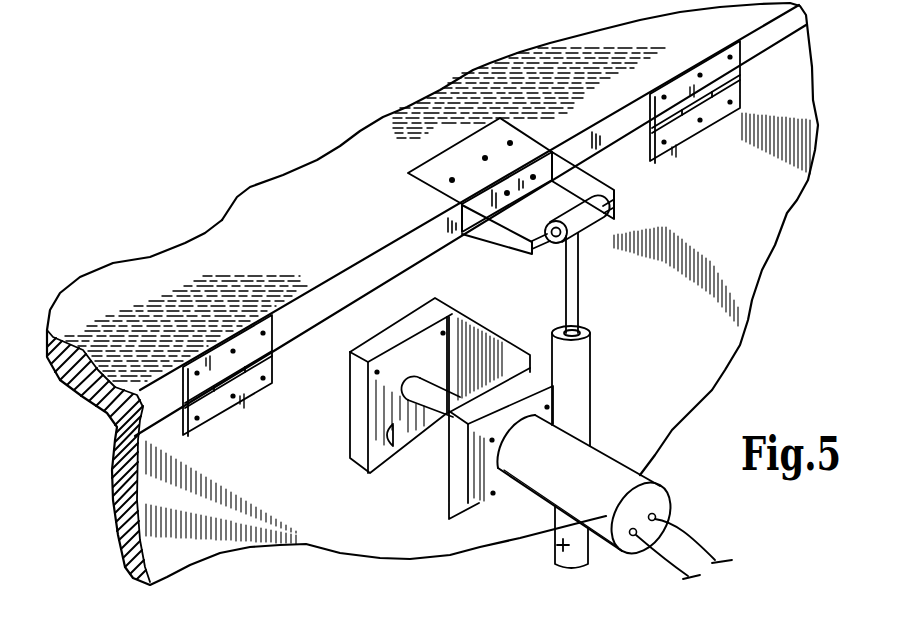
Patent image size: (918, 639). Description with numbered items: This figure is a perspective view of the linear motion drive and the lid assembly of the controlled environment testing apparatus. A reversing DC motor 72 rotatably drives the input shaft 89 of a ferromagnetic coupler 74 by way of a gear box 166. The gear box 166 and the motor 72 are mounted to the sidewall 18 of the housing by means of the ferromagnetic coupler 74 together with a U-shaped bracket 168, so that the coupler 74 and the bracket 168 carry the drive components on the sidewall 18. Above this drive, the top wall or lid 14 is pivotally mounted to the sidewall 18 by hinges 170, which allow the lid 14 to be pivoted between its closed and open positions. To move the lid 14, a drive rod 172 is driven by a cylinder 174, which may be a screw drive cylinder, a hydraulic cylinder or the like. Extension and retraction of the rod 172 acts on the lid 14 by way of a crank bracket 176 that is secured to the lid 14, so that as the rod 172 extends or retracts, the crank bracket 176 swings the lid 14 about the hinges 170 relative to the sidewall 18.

The top wall or lid 14 is at (656, 42).
The sidewall 18 is at (735, 256).
The hinges 170 is at (694, 131).
The crank bracket 176 is at (450, 172).
The drive rod 172 is at (580, 300).
The cylinder 174 is at (563, 548).
The ferromagnetic coupler 74 is at (356, 398).
The U-shaped bracket 168 is at (365, 442).
The input shaft 89 is at (414, 460).
The gear box 166 is at (483, 509).
The reversing DC motor 72 is at (598, 473).